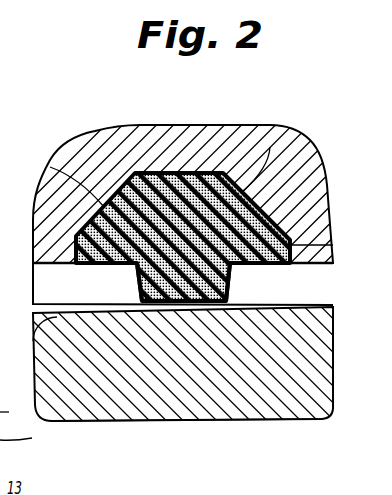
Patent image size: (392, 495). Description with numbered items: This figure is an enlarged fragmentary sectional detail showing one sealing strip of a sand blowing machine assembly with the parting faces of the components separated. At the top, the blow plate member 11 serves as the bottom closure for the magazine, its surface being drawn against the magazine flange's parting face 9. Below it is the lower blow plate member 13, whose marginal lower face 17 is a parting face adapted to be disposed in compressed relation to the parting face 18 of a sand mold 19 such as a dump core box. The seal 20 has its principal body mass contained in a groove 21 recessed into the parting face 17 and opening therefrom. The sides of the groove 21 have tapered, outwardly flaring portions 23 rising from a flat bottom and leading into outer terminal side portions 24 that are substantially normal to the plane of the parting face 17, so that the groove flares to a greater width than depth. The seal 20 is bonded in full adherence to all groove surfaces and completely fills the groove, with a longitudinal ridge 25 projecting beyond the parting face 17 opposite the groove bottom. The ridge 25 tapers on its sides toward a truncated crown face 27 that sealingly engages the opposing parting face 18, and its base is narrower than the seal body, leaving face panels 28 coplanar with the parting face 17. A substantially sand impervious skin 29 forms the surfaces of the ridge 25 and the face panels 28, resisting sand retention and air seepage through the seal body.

The parting face 9 is at (10, 414).
The blow plate member 11 is at (21, 437).
The lower blow plate member 13 is at (113, 148).
The lower face 17 is at (33, 272).
The parting face 18 is at (35, 340).
The sand mold 19 is at (265, 395).
The seal 20 is at (183, 204).
The groove 21 is at (178, 173).
The tapered outwardly flaring portions 23 is at (50, 167).
The outer terminal side portions 24 is at (78, 250).
The longitudinal ridge 25 is at (232, 275).
The truncated crown face 27 is at (190, 303).
The face panels 28 is at (100, 265).
The sand impervious skin 29 is at (140, 289).